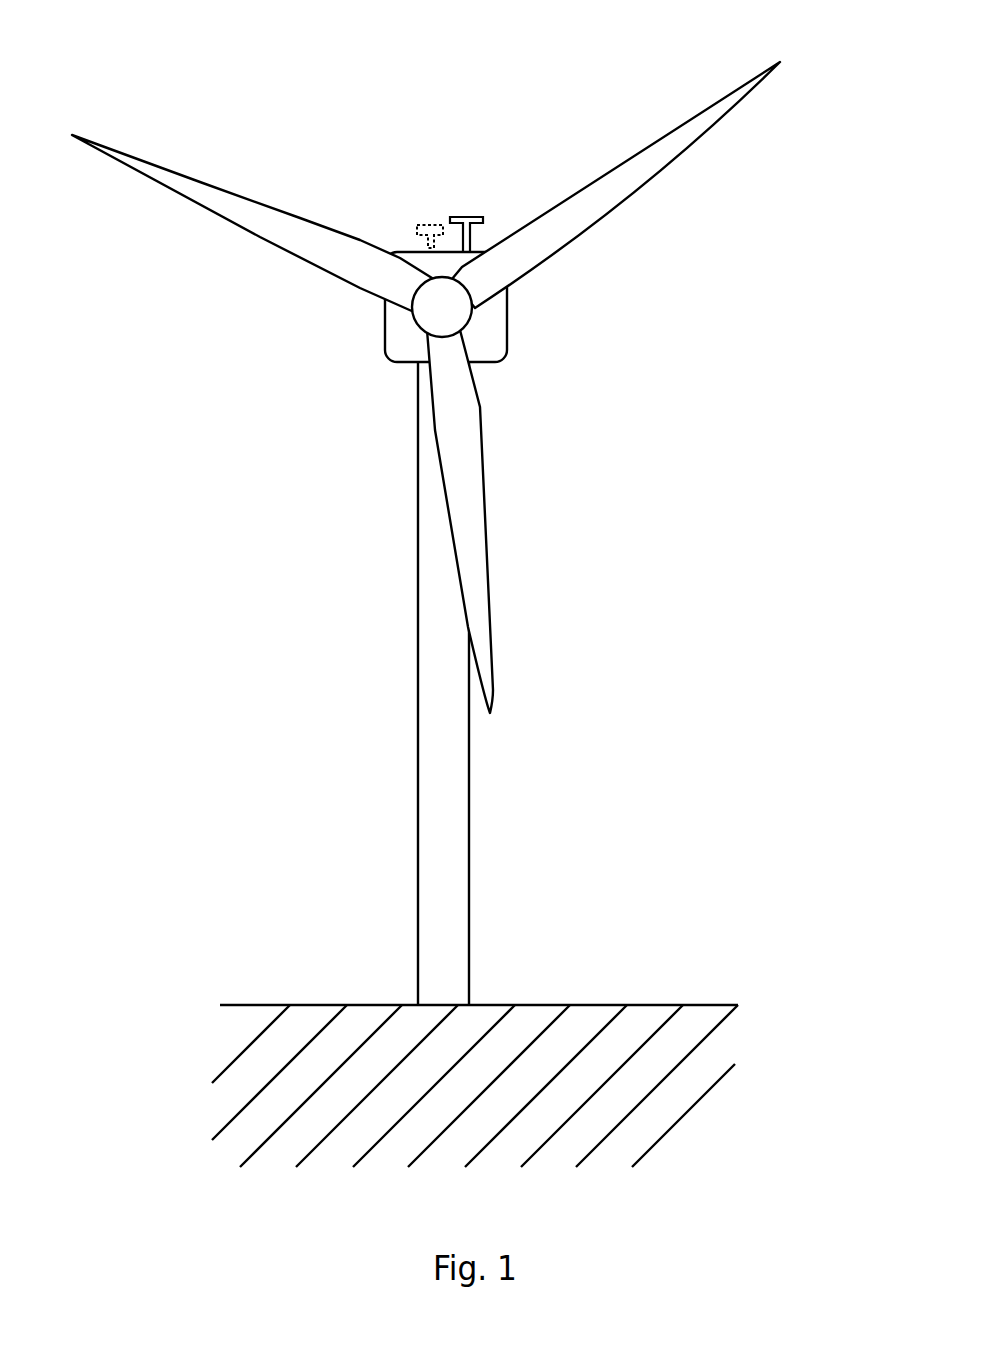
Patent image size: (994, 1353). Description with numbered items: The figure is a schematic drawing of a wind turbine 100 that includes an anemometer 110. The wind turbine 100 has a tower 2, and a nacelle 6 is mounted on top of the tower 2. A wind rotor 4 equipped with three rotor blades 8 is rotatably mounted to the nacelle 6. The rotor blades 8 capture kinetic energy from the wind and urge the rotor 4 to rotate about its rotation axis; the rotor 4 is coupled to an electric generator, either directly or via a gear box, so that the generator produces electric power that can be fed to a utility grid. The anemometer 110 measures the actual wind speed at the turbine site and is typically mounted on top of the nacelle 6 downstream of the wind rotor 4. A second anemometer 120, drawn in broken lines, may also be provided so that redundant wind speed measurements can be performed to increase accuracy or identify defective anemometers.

The wind turbine 100 is at (824, 126).
The tower 2 is at (462, 885).
The wind rotor 4 is at (473, 320).
The nacelle 6 is at (397, 341).
The rotor blades 8 is at (660, 171).
The anemometer 110 is at (472, 215).
The second anemometer 120 is at (430, 222).